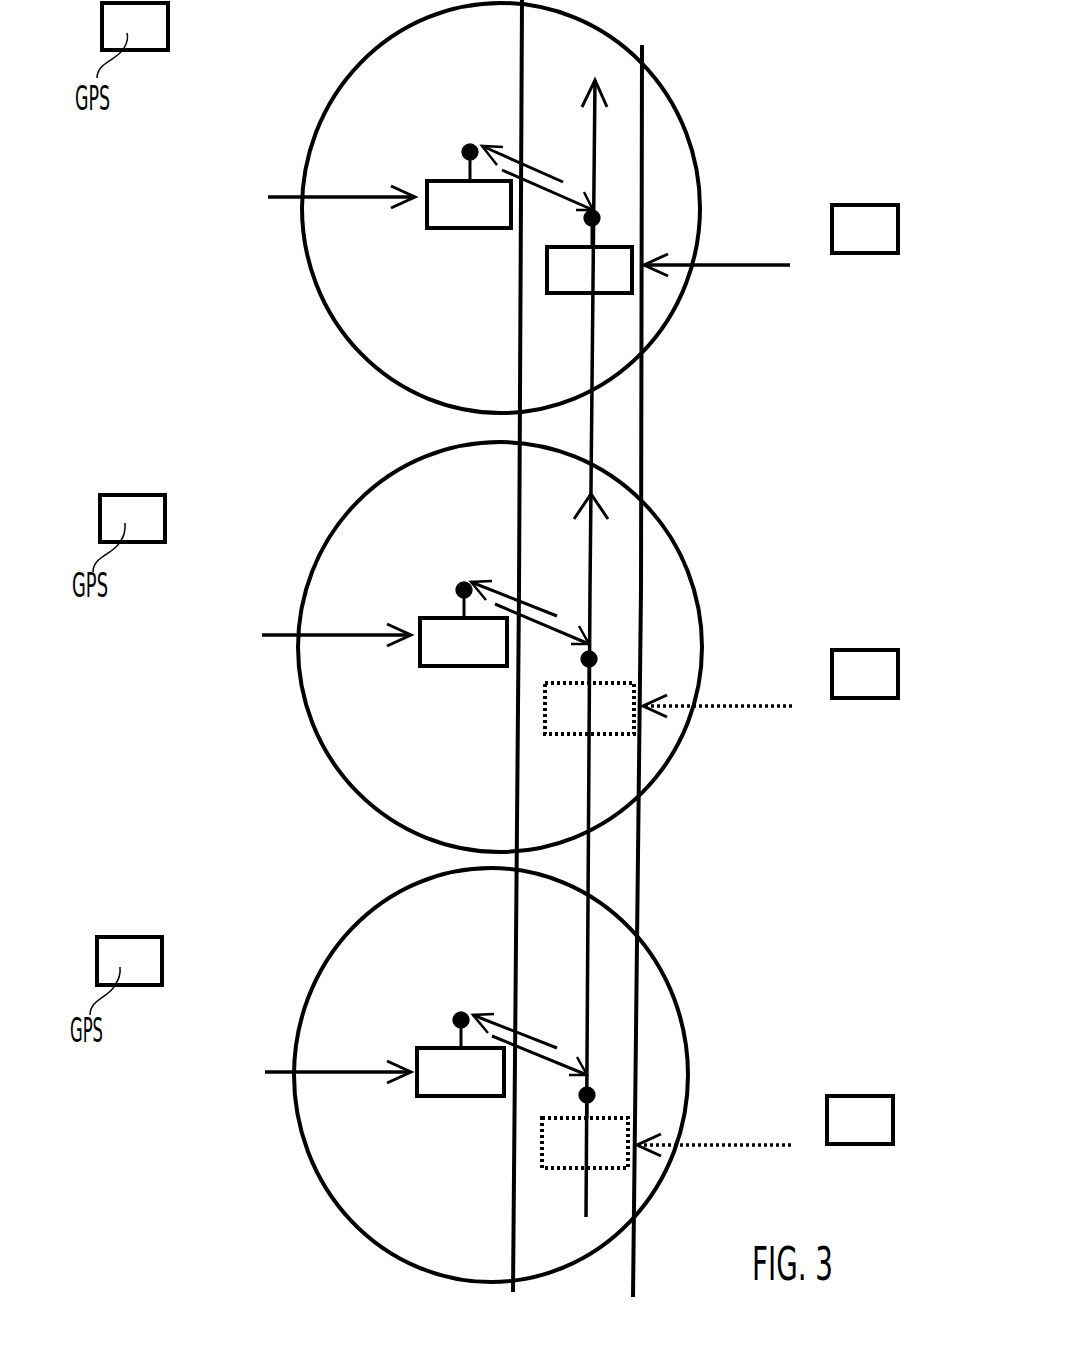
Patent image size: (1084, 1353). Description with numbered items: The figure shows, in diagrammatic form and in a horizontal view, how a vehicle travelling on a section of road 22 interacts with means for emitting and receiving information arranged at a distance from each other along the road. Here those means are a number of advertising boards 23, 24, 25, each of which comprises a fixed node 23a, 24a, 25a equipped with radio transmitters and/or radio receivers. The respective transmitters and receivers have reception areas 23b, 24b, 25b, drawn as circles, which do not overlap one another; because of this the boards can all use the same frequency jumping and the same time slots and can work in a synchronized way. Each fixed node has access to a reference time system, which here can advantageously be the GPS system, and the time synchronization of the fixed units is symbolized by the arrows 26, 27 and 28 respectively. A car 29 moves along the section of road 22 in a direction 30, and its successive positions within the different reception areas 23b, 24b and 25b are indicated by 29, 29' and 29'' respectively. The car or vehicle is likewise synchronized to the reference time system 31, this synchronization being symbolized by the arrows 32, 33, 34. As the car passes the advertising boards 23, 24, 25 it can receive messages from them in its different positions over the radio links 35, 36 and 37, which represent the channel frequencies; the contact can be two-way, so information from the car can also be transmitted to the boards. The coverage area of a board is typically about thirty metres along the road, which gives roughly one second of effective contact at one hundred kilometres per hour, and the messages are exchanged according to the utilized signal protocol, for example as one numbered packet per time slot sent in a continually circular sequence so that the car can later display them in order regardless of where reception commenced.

The section of road 22 is at (684, 887).
The advertising board 23 is at (489, 1081).
The fixed node 23a is at (449, 1079).
The reception area 23b is at (394, 1257).
The advertising board 24 is at (482, 647).
The fixed node 24a is at (447, 642).
The reception area 24b is at (371, 810).
The advertising board 25 is at (492, 208).
The fixed node 25a is at (452, 200).
The reception area 25b is at (372, 368).
The time synchronization system 26 is at (280, 1071).
The time synchronization system 27 is at (275, 634).
The time synchronization system 28 is at (277, 197).
The car 29 is at (642, 1075).
The car position 29' is at (646, 640).
The car position 29'' is at (647, 198).
The direction 30 is at (596, 494).
The reference time system 31 is at (850, 222).
The synchronization arrow 32 is at (757, 1143).
The synchronization arrow 33 is at (775, 704).
The synchronization arrow 34 is at (777, 263).
The radio link 35 is at (541, 1040).
The radio link 36 is at (543, 607).
The radio link 37 is at (550, 176).